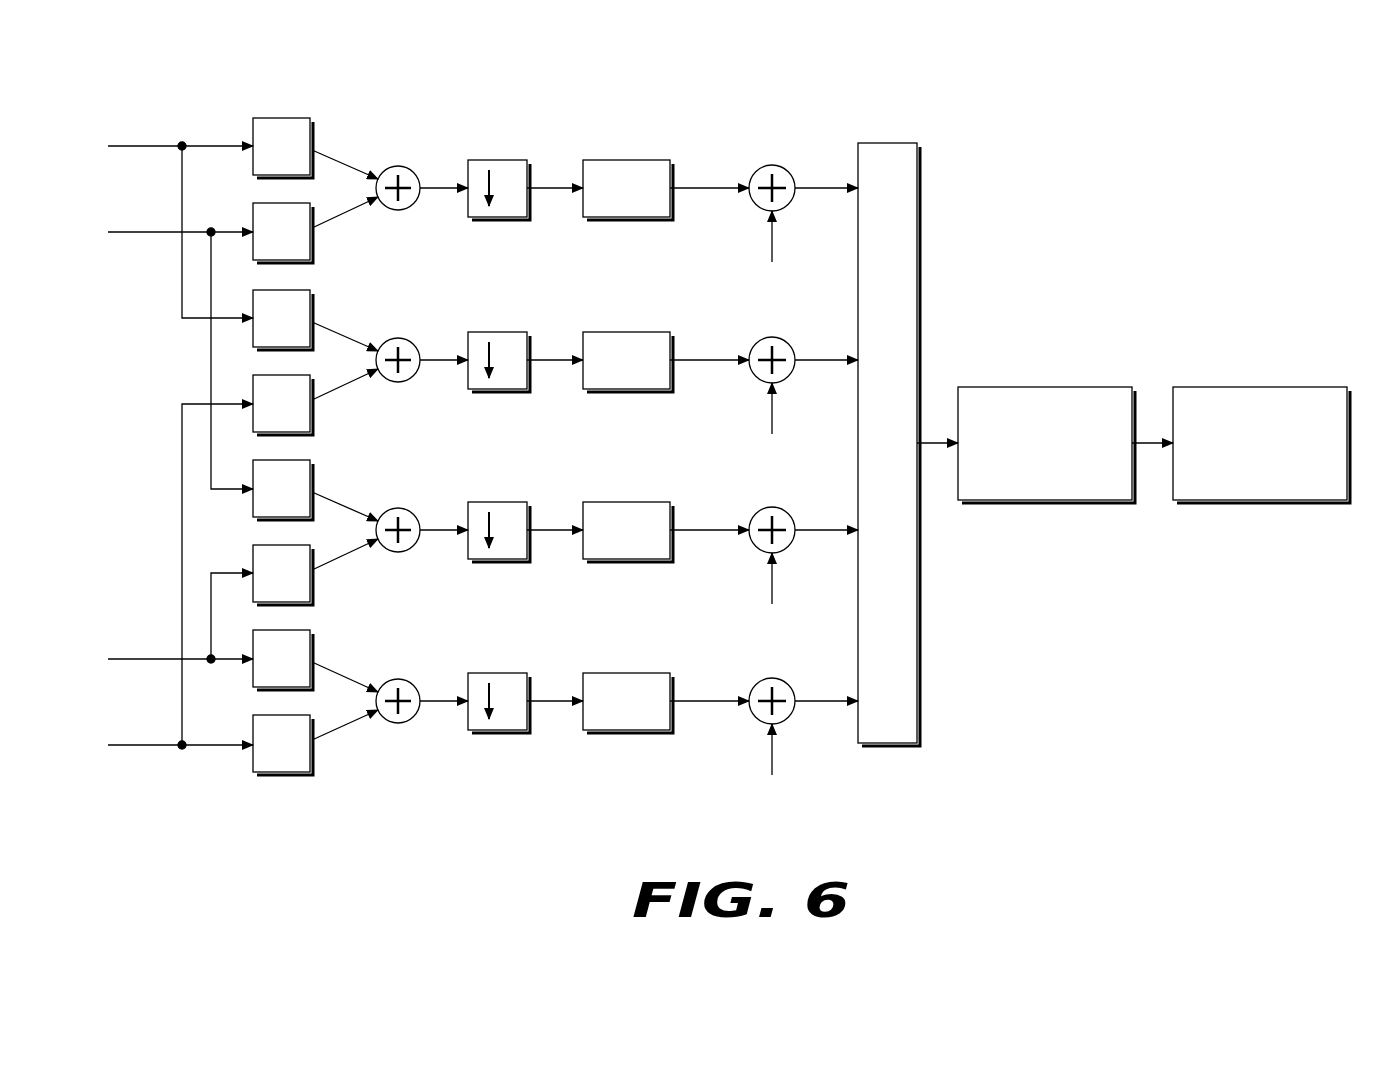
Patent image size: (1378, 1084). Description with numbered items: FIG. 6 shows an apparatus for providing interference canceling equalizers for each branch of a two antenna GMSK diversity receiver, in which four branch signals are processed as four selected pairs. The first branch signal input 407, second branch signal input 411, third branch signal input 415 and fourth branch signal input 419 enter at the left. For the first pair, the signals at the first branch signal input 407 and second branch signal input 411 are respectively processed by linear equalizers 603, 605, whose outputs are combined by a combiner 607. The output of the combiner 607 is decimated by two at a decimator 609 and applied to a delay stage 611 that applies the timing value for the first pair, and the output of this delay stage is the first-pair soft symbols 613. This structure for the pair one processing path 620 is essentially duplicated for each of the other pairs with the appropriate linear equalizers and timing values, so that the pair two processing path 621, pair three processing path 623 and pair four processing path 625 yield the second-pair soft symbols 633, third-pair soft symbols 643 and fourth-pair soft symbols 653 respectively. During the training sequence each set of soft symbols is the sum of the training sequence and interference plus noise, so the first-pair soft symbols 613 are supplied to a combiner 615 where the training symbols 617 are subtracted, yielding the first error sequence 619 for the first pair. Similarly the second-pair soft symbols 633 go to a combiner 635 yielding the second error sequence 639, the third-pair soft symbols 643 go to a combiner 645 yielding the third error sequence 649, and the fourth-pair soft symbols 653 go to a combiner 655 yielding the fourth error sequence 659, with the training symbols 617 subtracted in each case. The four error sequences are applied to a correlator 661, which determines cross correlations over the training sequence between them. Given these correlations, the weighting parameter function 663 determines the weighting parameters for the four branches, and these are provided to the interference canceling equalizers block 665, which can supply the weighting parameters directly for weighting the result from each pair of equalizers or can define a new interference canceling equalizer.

The first branch signal input 407 is at (133, 145).
The second branch signal input 411 is at (133, 231).
The third branch signal input 415 is at (133, 658).
The fourth branch signal input 419 is at (133, 744).
The linear equalizer 603 is at (291, 117).
The linear equalizer 605 is at (253, 212).
The combiner 607 is at (392, 166).
The decimator 609 is at (479, 160).
The delay stage 611 is at (642, 160).
The soft symbols y_n^1 613 is at (713, 194).
The combiner 615 is at (752, 166).
The training symbols s_n 617 is at (771, 241).
The error sequence n_n^1 619 is at (827, 194).
The pair one processing path 620 is at (531, 167).
The pair two processing path 621 is at (555, 348).
The pair three processing path 623 is at (555, 519).
The pair four processing path 625 is at (555, 691).
The soft symbols y_n^2 633 is at (713, 366).
The combiner 635 is at (754, 338).
The error sequence n_n^2 639 is at (827, 366).
The soft symbols y_n^3 643 is at (713, 536).
The combiner 645 is at (754, 508).
The error sequence n_n^3 649 is at (827, 536).
The soft symbols y_n^4 653 is at (713, 707).
The combiner 655 is at (754, 679).
The error sequence n_n^4 659 is at (827, 707).
The correlator 661 is at (889, 143).
The weighting parameter function 663 is at (1088, 387).
The interference canceling equalizers block 665 is at (1296, 387).